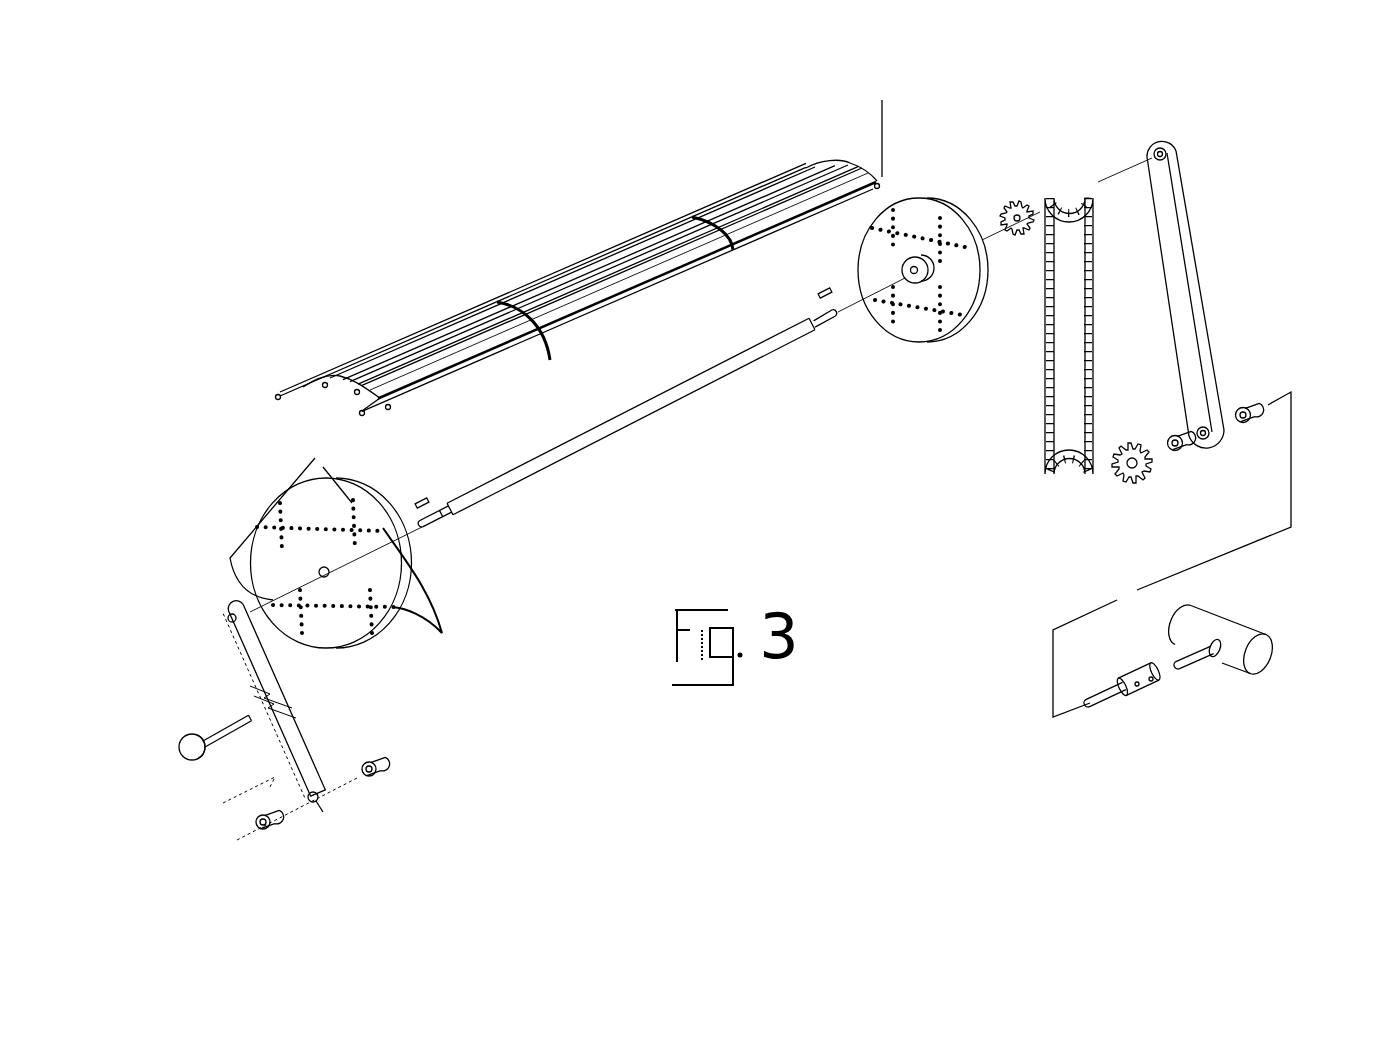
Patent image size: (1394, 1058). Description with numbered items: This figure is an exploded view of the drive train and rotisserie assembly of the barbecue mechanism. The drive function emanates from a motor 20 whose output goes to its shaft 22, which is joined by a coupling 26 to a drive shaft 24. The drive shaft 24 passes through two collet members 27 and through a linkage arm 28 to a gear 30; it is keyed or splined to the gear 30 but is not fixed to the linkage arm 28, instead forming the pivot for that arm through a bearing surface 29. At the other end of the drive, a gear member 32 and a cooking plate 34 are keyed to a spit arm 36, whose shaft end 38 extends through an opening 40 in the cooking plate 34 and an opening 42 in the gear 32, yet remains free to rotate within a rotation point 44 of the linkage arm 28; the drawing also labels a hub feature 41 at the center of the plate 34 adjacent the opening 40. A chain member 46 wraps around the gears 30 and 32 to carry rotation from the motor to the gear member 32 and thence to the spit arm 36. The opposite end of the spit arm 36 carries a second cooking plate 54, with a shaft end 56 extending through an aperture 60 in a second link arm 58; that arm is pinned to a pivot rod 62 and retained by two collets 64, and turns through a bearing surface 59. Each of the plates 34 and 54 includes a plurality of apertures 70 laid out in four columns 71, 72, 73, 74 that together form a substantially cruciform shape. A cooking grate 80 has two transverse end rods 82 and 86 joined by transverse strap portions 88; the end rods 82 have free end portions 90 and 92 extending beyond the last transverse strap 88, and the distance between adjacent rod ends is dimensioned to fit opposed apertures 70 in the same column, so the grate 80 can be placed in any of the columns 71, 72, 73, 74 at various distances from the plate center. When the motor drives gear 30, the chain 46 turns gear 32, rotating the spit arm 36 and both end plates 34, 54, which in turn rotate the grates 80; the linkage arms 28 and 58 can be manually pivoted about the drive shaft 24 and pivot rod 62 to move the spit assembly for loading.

The motor 20 is at (1240, 625).
The shaft 22 is at (1196, 662).
The drive shaft 24 is at (1112, 702).
The coupling 26 is at (1147, 690).
The collet members 27 is at (1252, 427).
The linkage arm 28 is at (1190, 266).
The bearing surface 29 is at (1207, 440).
The gear 30 is at (1137, 485).
The gear member 32 is at (1016, 200).
The cooking plate 34 is at (906, 198).
The spit arm 36 is at (680, 398).
The shaft end 38 is at (835, 322).
The opening 40 is at (918, 285).
The hub flange 41 is at (930, 270).
The opening 42 is at (1020, 235).
The rotation point 44 is at (1154, 156).
The chain member 46 is at (1046, 425).
The second cooking plate 54 is at (350, 623).
The shaft end 56 is at (448, 516).
The link arm 58 is at (303, 742).
The bearing surface 59 is at (316, 806).
The aperture 60 is at (230, 612).
The pivot rod 62 is at (217, 730).
The collets 64 is at (380, 777).
The apertures 70 is at (872, 228).
The column of apertures 71 is at (323, 467).
The column of apertures 72 is at (442, 633).
The column of apertures 73 is at (367, 583).
The column of apertures 74 is at (231, 559).
The cooking grate 80 is at (598, 240).
The end rod 82 is at (300, 393).
The end rod 86 is at (418, 367).
The strap 88 is at (694, 217).
The free end portion 90 is at (814, 168).
The free end portion 92 is at (280, 393).